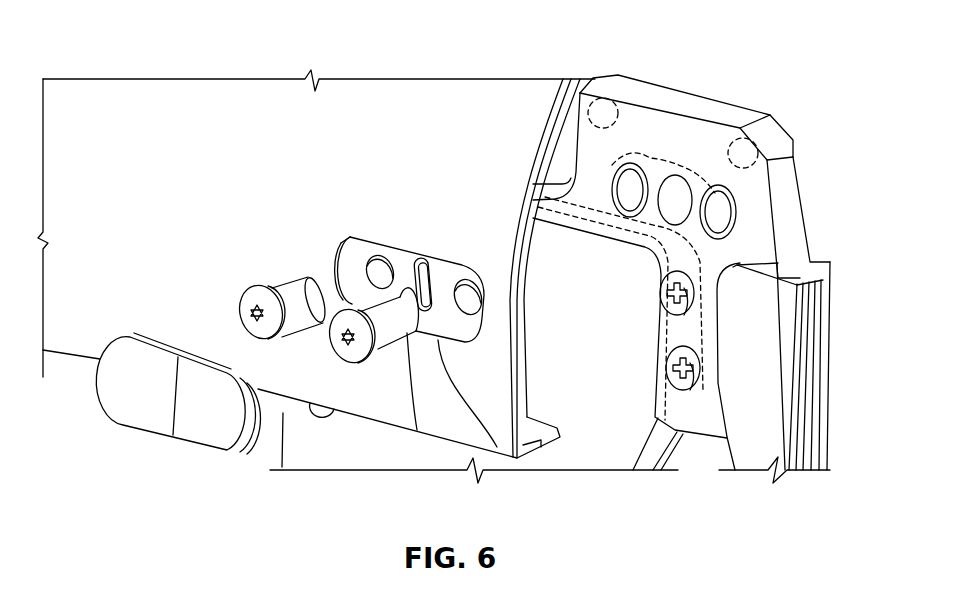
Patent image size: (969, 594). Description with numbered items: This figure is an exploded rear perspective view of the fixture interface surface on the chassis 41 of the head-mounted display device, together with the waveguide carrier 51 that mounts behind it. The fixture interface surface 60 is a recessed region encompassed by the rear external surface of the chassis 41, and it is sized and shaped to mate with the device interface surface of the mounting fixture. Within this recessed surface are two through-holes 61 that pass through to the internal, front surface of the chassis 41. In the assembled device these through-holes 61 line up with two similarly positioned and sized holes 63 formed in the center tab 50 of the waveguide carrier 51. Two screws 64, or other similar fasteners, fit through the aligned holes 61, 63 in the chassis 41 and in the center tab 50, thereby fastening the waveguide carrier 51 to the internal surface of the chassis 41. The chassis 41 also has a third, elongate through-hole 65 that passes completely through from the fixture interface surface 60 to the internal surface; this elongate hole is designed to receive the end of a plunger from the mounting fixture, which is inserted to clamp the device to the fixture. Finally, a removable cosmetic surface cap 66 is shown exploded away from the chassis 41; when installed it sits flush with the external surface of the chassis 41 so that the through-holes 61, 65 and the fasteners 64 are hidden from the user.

The chassis 41 is at (90, 358).
The center tab 50 is at (687, 93).
The waveguide carrier 51 is at (828, 325).
The fixture interface surface 60 is at (493, 447).
The through-holes 61 is at (372, 255).
The holes 63 is at (622, 163).
The screws 64 is at (270, 338).
The elongate through-hole 65 is at (423, 258).
The cosmetic surface cap 66 is at (158, 433).